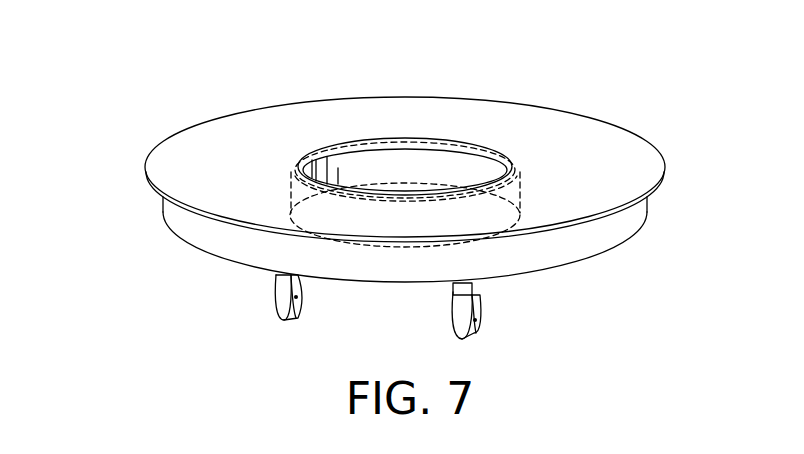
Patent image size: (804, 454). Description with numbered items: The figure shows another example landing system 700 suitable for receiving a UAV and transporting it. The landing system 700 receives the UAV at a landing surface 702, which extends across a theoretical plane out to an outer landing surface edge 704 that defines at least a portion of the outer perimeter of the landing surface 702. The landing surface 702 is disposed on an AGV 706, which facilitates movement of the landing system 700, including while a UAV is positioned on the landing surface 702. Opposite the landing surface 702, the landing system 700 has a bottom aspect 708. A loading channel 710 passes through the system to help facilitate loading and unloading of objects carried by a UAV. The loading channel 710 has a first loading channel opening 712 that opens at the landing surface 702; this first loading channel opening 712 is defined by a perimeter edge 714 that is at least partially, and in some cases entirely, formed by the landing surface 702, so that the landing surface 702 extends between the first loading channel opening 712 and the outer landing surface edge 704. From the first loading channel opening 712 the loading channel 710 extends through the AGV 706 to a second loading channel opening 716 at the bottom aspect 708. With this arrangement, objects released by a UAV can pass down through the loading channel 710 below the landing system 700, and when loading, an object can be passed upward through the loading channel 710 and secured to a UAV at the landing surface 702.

The landing system 700 is at (262, 52).
The landing surface 702 is at (589, 142).
The outer landing surface edge 704 is at (146, 166).
The AGV 706 is at (624, 226).
The bottom aspect 708 is at (540, 273).
The loading channel 710 is at (460, 160).
The first loading channel opening 712 is at (377, 163).
The perimeter edge 714 is at (328, 146).
The second loading channel opening 716 is at (407, 250).